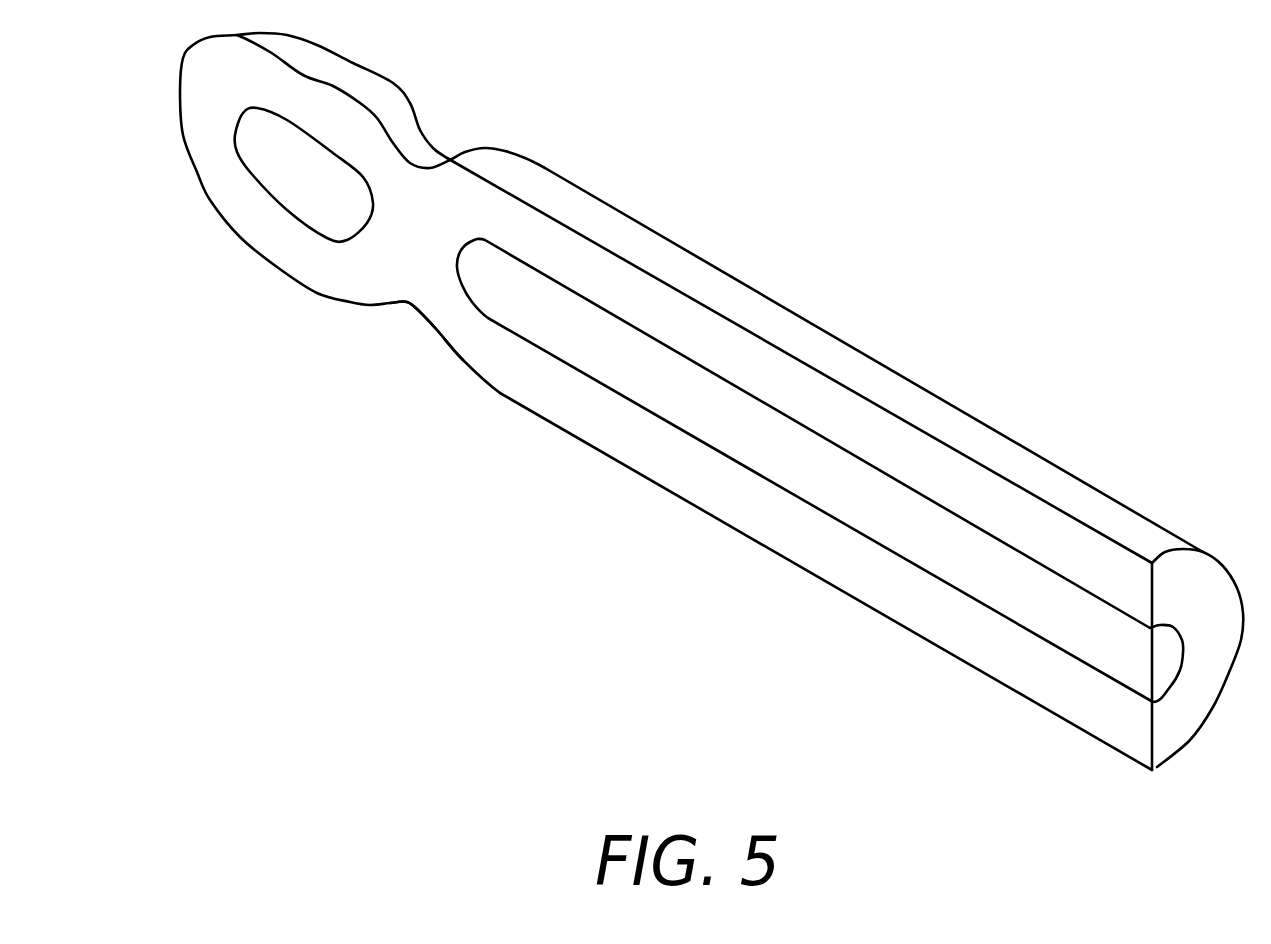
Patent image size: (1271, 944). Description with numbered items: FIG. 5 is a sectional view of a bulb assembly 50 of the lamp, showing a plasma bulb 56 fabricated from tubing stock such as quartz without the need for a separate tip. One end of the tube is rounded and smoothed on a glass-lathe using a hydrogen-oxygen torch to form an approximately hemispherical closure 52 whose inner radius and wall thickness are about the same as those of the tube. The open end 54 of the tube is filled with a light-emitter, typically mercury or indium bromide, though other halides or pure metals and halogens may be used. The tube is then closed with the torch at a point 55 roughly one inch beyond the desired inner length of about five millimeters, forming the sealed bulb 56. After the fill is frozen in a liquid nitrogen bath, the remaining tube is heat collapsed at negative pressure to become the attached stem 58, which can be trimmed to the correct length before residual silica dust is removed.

The tool 50 is at (523, 87).
The hemispherical closure 52 is at (183, 68).
The open end 54 is at (1070, 620).
The closure point 55 is at (412, 308).
The bulb 56 is at (322, 188).
The stem 58 is at (873, 353).